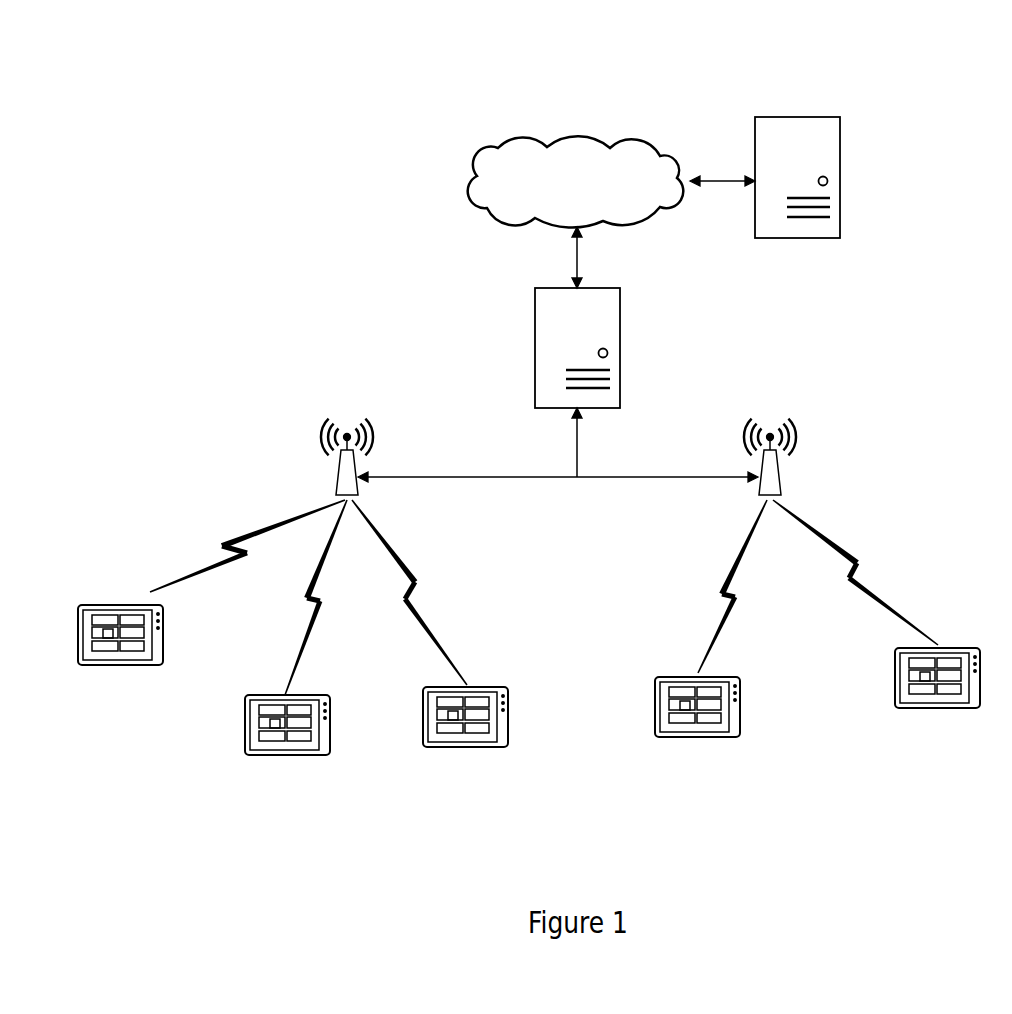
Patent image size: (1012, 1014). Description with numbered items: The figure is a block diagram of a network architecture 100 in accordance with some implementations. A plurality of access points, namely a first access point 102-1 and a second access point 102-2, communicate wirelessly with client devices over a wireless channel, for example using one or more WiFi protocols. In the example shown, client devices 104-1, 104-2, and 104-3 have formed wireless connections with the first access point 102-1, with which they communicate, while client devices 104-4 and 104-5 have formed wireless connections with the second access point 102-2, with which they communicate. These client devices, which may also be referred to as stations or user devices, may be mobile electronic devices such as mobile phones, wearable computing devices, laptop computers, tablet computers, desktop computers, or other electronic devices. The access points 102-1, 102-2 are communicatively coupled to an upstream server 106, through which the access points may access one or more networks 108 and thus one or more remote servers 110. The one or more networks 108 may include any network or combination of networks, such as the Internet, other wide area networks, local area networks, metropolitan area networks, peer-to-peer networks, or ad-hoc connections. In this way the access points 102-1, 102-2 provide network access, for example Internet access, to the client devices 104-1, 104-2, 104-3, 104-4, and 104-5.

The network architecture 100 is at (396, 48).
The first access point 102-1 is at (338, 476).
The second access point 102-2 is at (812, 484).
The client device 104-1 is at (93, 666).
The client device 104-2 is at (258, 756).
The client device 104-3 is at (440, 748).
The client device 104-4 is at (670, 738).
The client device 104-5 is at (910, 709).
The upstream server 106 is at (564, 343).
The networks 108 is at (628, 191).
The remote server 110 is at (784, 183).